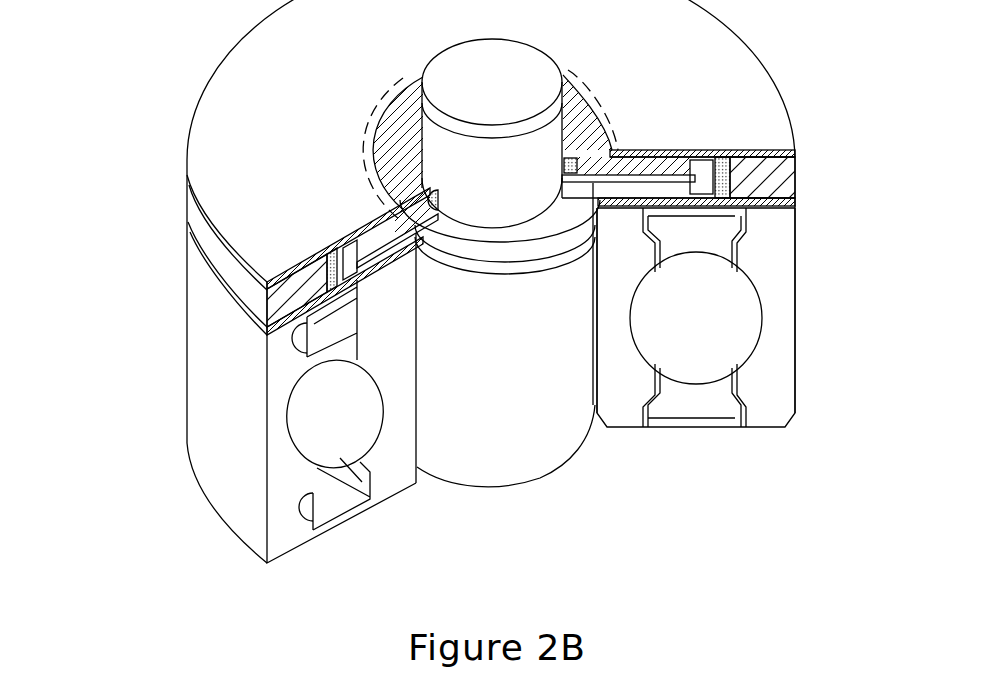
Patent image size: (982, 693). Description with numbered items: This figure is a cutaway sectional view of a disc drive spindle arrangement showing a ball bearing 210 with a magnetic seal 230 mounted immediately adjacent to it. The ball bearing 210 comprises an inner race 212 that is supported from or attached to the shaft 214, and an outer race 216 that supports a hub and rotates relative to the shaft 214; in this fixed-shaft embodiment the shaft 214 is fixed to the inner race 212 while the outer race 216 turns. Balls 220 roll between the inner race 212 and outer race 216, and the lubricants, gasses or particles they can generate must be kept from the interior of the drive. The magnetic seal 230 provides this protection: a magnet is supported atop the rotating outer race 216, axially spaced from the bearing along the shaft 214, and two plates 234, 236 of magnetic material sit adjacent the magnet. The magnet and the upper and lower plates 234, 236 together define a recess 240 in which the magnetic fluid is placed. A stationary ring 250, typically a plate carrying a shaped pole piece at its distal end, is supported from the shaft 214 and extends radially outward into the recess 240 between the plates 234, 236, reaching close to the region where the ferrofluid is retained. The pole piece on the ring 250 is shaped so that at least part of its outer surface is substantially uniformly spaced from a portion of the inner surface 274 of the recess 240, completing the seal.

The magnetic seal 230 is at (160, 133).
The plate 234 is at (297, 268).
The recess 240 is at (270, 331).
The plate 236 is at (272, 340).
The inner surface 274 is at (377, 262).
The stationary ring 250 is at (440, 245).
The shaft 214 is at (558, 442).
The ball 220 is at (334, 413).
The ball bearing 210 is at (736, 493).
The inner race 212 is at (618, 420).
The outer race 216 is at (796, 378).